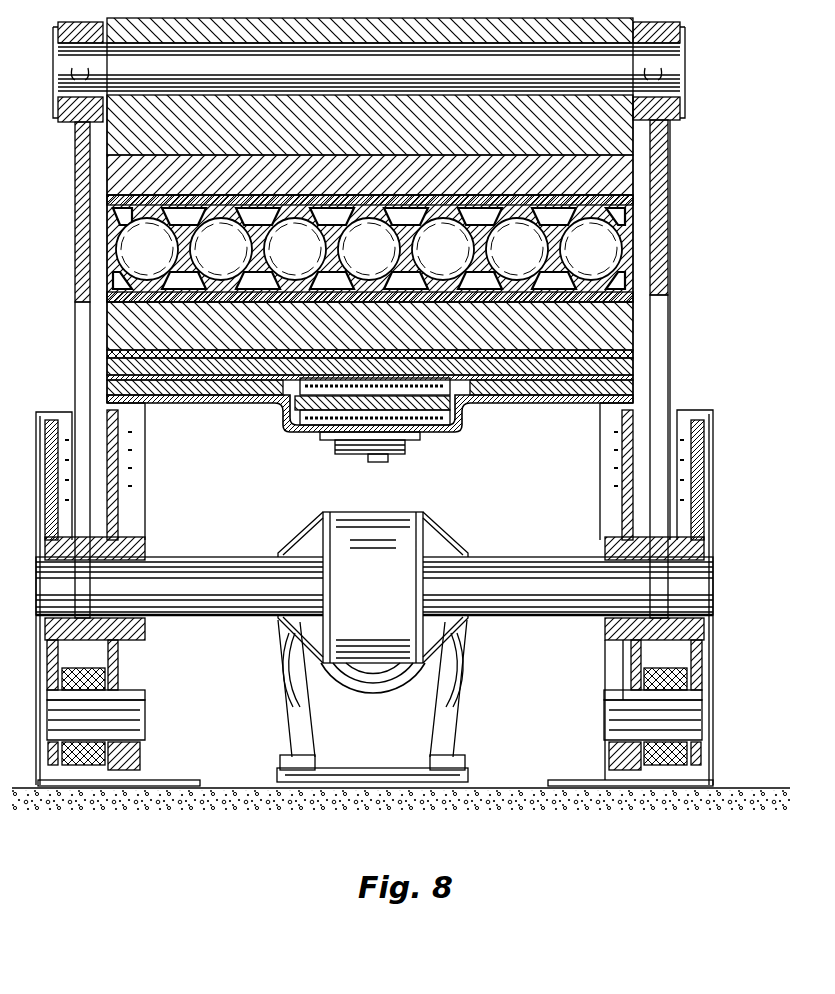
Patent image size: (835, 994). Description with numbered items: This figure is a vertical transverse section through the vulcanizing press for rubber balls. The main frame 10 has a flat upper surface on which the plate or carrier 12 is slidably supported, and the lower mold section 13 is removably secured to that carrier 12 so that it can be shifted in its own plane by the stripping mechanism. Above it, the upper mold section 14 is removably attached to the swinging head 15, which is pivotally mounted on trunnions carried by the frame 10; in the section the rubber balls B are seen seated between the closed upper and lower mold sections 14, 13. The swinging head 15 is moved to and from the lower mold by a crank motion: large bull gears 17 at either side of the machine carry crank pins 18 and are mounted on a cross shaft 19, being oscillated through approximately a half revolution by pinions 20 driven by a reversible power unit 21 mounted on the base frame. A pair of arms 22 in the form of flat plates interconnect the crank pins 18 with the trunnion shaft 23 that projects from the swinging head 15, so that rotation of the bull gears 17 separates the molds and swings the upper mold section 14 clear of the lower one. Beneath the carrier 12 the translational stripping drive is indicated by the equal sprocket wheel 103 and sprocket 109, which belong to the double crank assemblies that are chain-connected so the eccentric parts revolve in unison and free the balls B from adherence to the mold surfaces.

The main frame 10 is at (423, 426).
The plate or carrier 12 is at (633, 368).
The lower mold section 13 is at (633, 285).
The upper mold section 14 is at (636, 225).
The swinging head 15 is at (617, 139).
The bull gears 17 is at (636, 418).
The crank pins 18 is at (105, 715).
The cross shaft 19 is at (545, 557).
The pinions 20 is at (112, 630).
The reversible power unit 21 is at (440, 535).
The arms 22 is at (78, 282).
The trunnion shaft 23 is at (369, 67).
The sprocket wheel 103 is at (322, 437).
The sprocket 109 is at (300, 410).
The balls B is at (128, 235).